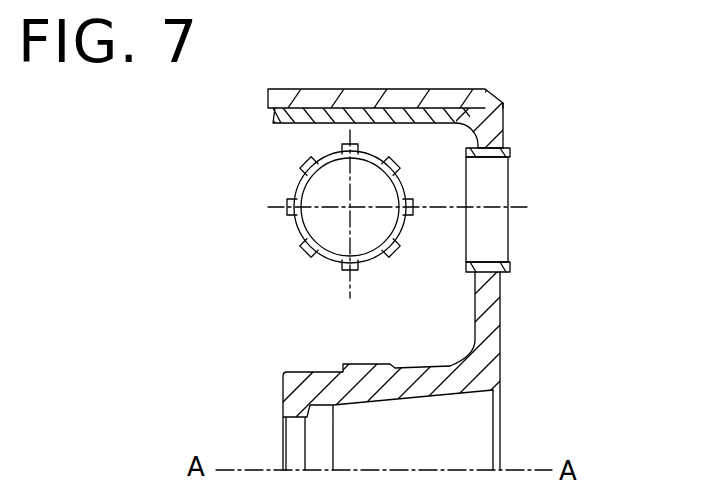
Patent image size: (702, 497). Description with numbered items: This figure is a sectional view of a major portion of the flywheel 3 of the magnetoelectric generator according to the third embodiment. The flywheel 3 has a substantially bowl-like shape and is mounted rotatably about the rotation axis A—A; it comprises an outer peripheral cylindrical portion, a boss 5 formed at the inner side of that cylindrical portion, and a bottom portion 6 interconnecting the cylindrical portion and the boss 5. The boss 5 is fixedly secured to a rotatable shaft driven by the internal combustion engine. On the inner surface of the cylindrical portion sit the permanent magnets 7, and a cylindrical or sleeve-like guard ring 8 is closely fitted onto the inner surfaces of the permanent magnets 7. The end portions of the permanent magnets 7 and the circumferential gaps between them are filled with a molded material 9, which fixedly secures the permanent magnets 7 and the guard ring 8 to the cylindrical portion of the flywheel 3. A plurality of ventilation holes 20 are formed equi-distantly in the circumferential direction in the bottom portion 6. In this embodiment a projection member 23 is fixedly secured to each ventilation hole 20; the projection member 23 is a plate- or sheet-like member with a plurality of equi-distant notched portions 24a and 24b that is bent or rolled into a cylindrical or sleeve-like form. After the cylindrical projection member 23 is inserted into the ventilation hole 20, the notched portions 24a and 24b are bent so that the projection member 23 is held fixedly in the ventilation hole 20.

The flywheel 3 is at (527, 138).
The boss 5 is at (424, 387).
The bottom portion 6 is at (502, 330).
The permanent magnets 7 is at (328, 148).
The guard ring 8 is at (306, 124).
The molded material 9 is at (491, 95).
The ventilation holes 20 is at (508, 253).
The projection member 23 is at (510, 153).
The notched portions 24a is at (303, 174).
The notched portions 24b is at (507, 267).